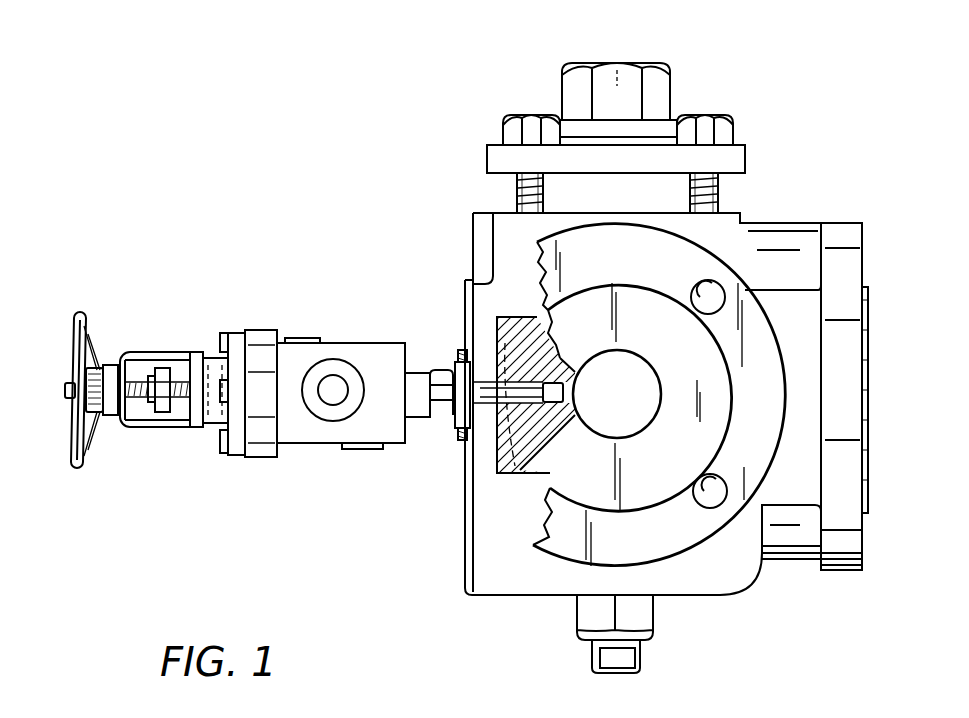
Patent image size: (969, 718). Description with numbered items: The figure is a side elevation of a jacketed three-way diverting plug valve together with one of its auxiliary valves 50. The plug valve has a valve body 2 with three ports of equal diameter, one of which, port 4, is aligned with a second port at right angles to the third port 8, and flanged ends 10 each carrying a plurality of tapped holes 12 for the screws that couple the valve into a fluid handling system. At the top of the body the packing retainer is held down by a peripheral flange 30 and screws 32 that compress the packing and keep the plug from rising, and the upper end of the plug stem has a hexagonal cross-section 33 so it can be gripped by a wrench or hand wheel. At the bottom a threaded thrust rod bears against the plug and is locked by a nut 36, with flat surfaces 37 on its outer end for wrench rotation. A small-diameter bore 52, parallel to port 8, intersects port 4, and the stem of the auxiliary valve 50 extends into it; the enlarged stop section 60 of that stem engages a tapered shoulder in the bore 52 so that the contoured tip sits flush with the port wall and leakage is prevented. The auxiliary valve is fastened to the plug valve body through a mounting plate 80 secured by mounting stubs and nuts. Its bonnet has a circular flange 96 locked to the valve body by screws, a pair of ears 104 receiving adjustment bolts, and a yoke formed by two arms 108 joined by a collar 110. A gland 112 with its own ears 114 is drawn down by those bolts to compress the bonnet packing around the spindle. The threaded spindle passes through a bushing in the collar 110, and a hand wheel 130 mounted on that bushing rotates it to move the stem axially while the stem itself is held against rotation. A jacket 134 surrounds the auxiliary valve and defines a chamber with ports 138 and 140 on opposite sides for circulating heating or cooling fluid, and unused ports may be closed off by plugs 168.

The valve body 2 is at (617, 102).
The port 4 is at (648, 382).
The third port 8 is at (866, 365).
The flanged end 10 is at (862, 238).
The tapped holes 12 is at (706, 282).
The peripheral flange 30 is at (740, 160).
The screws 32 is at (510, 132).
The hexagonal cross-section 33 is at (660, 83).
The nut 36 is at (585, 618).
The flat surfaces 37 is at (625, 662).
The auxiliary valve 50 is at (335, 396).
The bore 52 is at (537, 378).
The stop section 60 is at (557, 392).
The mounting plate 80 is at (460, 413).
The circular flange 96 is at (235, 453).
The ears 104 is at (203, 425).
The arms 108 is at (130, 352).
The collar 110 is at (112, 390).
The gland 112 is at (180, 392).
The ears 114 is at (162, 368).
The hand wheel 130 is at (74, 318).
The jacket 134 is at (300, 430).
The port 138 is at (302, 338).
The port 140 is at (360, 450).
The plug 168 is at (338, 380).